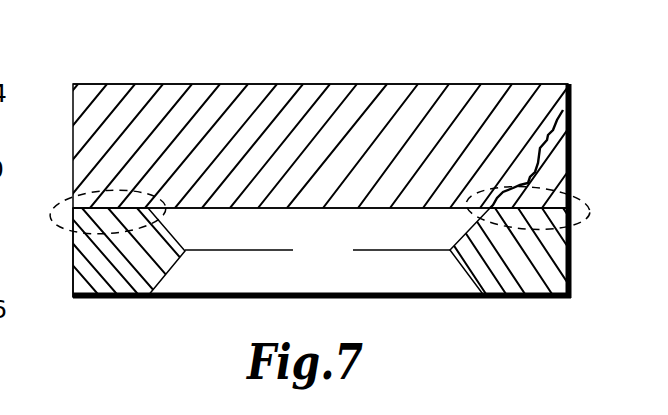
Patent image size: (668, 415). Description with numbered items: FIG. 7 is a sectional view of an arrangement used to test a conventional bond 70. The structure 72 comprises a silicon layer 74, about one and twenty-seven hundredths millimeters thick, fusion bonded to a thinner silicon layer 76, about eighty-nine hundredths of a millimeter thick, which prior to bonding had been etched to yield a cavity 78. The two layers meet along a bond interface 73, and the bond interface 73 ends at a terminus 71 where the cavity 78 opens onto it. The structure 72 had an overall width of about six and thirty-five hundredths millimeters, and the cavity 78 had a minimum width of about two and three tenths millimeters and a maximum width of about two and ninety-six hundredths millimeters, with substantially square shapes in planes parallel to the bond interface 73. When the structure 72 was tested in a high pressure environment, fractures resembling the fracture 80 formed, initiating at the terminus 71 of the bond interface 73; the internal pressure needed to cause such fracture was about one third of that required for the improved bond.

The bond 70 is at (58, 206).
The terminus of bond interface 71 is at (152, 211).
The structure 72 is at (228, 69).
The bond interface 73 is at (73, 236).
The silicon layer 74 is at (73, 118).
The silicon layer 76 is at (73, 263).
The cavity 78 is at (340, 263).
The fracture 80 is at (547, 138).